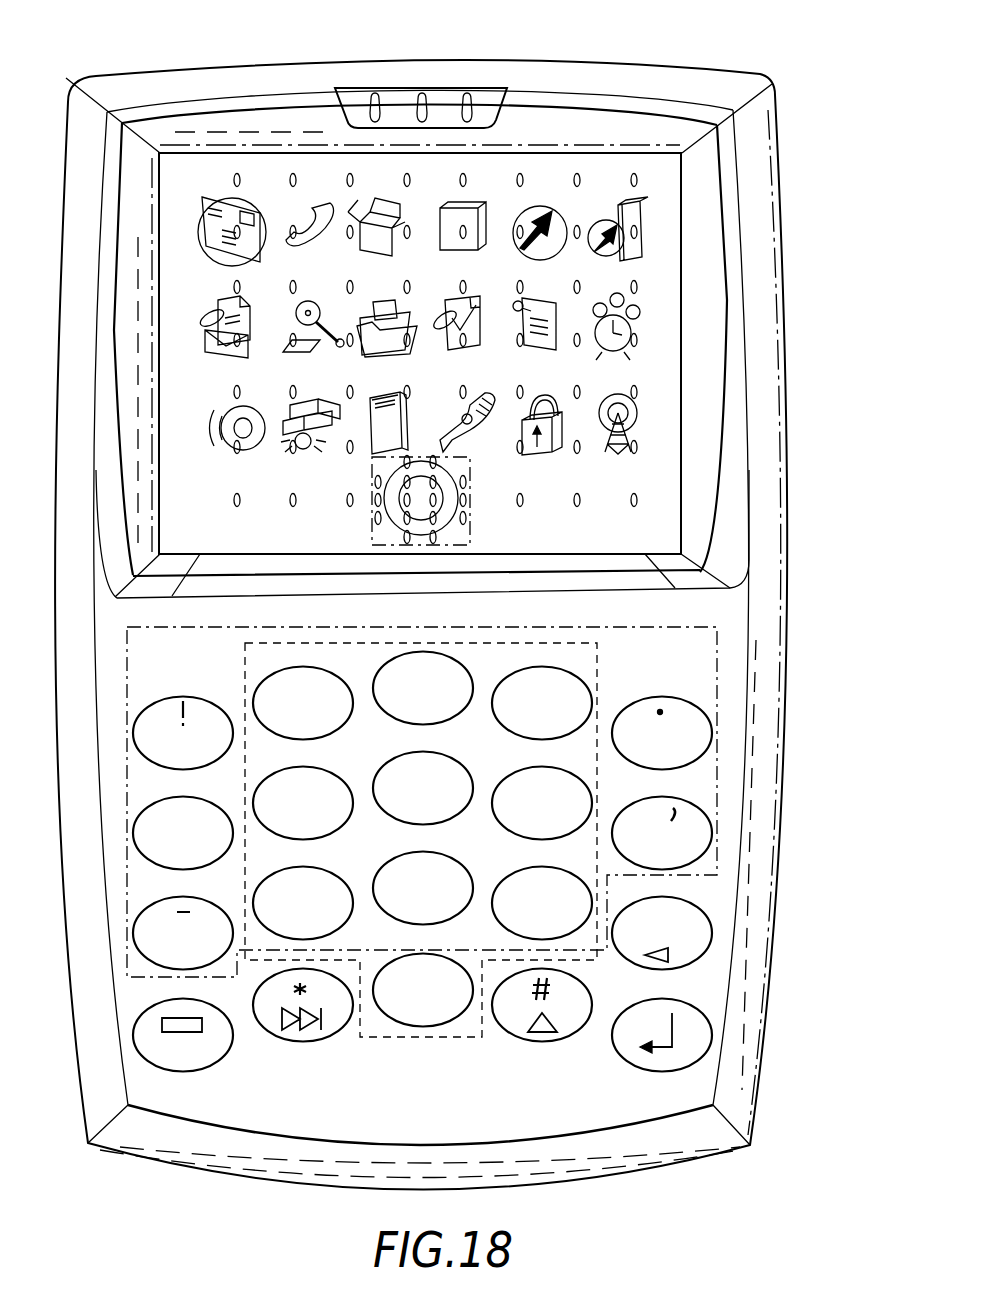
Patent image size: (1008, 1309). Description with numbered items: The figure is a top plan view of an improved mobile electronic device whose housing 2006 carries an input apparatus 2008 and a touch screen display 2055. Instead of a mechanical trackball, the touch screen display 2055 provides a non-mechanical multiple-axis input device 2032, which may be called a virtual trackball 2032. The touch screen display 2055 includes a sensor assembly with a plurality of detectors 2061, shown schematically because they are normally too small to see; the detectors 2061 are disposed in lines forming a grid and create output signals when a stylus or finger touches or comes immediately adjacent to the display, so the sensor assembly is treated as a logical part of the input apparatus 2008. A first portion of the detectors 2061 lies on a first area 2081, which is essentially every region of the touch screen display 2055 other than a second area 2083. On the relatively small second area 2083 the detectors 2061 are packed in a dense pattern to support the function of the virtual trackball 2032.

The housing 2006 is at (640, 67).
The touch screen display 2055 is at (556, 188).
The first area 2081 is at (627, 474).
The detectors 2061 is at (374, 518).
The non-mechanical multiple-axis input device 2032 is at (418, 540).
The second area 2083 is at (472, 534).
The input apparatus 2008 is at (733, 647).